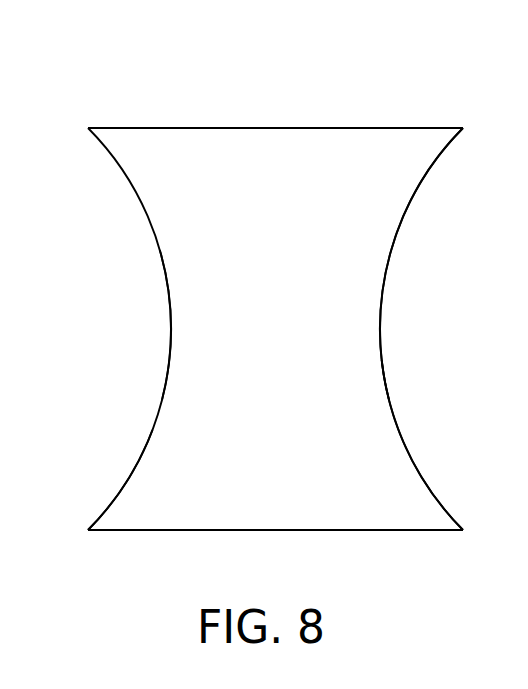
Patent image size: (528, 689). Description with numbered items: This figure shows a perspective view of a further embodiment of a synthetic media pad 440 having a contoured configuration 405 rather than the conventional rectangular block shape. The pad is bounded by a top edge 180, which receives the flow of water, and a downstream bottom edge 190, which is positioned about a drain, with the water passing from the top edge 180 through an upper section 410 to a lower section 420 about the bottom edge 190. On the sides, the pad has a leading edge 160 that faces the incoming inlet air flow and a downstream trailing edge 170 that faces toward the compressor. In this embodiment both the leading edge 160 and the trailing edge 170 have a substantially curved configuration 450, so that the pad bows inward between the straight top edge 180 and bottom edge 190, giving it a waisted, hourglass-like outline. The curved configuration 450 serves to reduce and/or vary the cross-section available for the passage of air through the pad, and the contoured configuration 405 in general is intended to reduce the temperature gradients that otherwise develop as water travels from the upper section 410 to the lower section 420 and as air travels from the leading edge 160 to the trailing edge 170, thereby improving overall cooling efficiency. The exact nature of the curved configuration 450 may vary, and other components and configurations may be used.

The synthetic media pad 440 is at (88, 49).
The contoured configuration 405 is at (136, 225).
The curved configuration 450 is at (168, 302).
The leading edge 160 is at (130, 475).
The trailing edge 170 is at (421, 475).
The top edge 180 is at (426, 128).
The bottom edge 190 is at (412, 530).
The upper section 410 is at (409, 207).
The lower section 420 is at (394, 408).